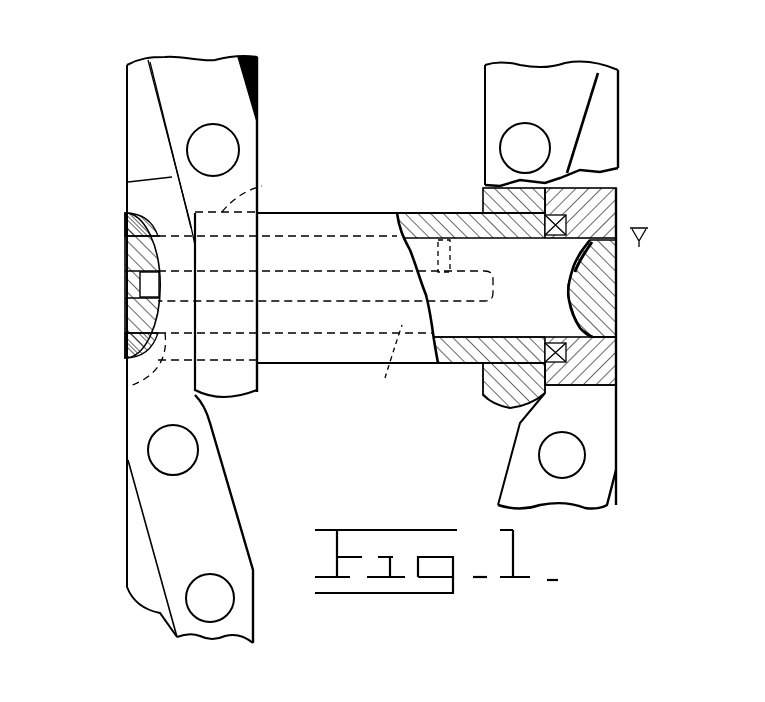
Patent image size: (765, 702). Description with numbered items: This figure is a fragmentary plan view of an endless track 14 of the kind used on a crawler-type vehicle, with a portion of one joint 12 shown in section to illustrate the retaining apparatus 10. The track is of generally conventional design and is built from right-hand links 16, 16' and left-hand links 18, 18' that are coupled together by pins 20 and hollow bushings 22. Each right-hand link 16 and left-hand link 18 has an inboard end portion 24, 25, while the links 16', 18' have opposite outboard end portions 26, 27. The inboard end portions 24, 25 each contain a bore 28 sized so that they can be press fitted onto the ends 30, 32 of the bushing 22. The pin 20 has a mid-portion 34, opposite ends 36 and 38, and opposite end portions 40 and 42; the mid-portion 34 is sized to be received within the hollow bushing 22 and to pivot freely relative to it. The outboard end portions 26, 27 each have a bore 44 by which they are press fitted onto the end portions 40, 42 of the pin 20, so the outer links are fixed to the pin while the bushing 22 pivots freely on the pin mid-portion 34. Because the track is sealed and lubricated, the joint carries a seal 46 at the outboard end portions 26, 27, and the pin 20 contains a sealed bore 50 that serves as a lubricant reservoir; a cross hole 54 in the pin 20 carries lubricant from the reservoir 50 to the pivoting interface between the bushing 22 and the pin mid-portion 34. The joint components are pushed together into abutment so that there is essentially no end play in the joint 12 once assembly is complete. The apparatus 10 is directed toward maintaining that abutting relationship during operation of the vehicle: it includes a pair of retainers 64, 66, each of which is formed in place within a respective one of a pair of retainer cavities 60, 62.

The retaining apparatus 10 is at (118, 266).
The joint 12 is at (118, 313).
The endless track 14 is at (118, 135).
The right-hand link 16 is at (580, 122).
The right-hand link 16' is at (585, 447).
The left-hand link 18 is at (272, 89).
The left-hand link 18' is at (168, 519).
The pin 20 is at (624, 315).
The hollow bushing 22 is at (398, 212).
The inboard end portion 24 is at (495, 377).
The inboard end portion 25 is at (258, 380).
The outboard end portion 26 is at (577, 278).
The outboard end portion 27 is at (150, 190).
The bore 28 is at (482, 197).
The bushing end 30 is at (520, 336).
The bushing end 32 is at (262, 186).
The pin mid-portion 34 is at (373, 362).
The pin end 36 is at (608, 280).
The pin end 38 is at (135, 300).
The pin end portion 40 is at (610, 370).
The pin end portion 42 is at (127, 387).
The bore 44 is at (592, 240).
The seal 46 is at (600, 186).
The sealed bore 50 is at (390, 290).
The cross hole 54 is at (451, 262).
The retainer cavity 60 is at (626, 343).
The retainer cavity 62 is at (130, 233).
The retainer 64 is at (600, 277).
The retainer 66 is at (130, 335).